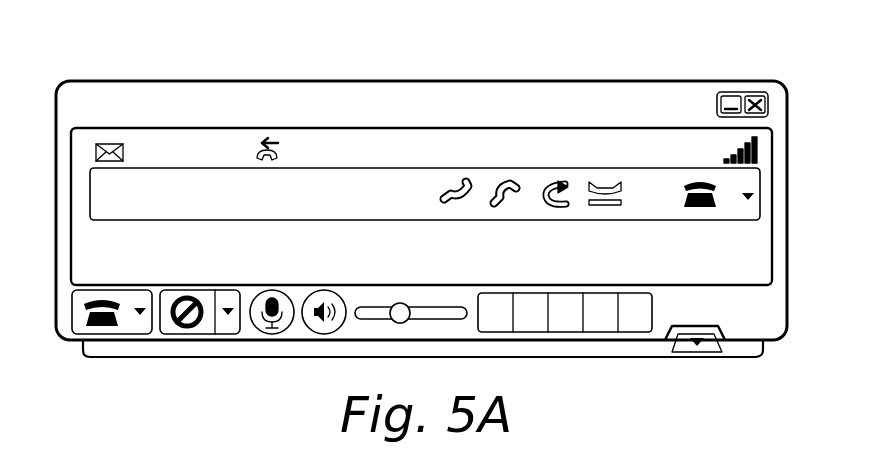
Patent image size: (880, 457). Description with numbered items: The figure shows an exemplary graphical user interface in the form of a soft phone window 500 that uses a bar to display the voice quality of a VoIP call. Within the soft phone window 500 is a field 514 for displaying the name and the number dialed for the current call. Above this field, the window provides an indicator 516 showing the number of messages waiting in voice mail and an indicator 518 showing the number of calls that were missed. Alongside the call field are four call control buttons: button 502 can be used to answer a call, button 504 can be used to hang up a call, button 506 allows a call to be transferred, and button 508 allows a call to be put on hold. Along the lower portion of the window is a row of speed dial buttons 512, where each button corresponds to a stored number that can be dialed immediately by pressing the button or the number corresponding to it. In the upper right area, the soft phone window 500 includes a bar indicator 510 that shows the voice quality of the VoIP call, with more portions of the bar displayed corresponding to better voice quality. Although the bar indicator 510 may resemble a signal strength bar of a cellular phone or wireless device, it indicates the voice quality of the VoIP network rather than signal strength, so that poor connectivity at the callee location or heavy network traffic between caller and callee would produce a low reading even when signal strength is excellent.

The soft phone window 500 is at (433, 202).
The button 502 is at (467, 180).
The button 504 is at (512, 180).
The button 506 is at (558, 182).
The button 508 is at (607, 185).
The bar indicator 510 is at (758, 148).
The speed dial buttons 512 is at (580, 333).
The field 514 is at (157, 205).
The indicator 516 is at (128, 143).
The indicator 518 is at (318, 138).